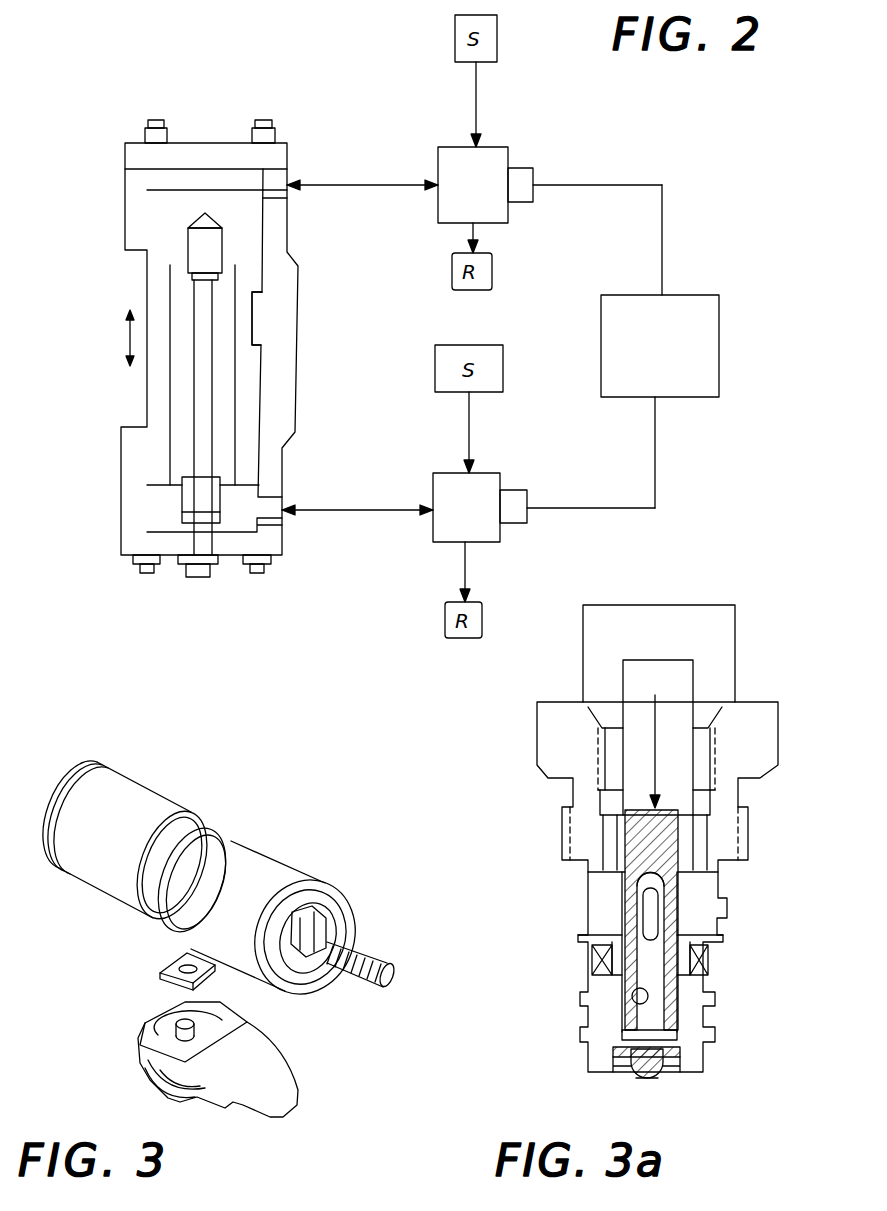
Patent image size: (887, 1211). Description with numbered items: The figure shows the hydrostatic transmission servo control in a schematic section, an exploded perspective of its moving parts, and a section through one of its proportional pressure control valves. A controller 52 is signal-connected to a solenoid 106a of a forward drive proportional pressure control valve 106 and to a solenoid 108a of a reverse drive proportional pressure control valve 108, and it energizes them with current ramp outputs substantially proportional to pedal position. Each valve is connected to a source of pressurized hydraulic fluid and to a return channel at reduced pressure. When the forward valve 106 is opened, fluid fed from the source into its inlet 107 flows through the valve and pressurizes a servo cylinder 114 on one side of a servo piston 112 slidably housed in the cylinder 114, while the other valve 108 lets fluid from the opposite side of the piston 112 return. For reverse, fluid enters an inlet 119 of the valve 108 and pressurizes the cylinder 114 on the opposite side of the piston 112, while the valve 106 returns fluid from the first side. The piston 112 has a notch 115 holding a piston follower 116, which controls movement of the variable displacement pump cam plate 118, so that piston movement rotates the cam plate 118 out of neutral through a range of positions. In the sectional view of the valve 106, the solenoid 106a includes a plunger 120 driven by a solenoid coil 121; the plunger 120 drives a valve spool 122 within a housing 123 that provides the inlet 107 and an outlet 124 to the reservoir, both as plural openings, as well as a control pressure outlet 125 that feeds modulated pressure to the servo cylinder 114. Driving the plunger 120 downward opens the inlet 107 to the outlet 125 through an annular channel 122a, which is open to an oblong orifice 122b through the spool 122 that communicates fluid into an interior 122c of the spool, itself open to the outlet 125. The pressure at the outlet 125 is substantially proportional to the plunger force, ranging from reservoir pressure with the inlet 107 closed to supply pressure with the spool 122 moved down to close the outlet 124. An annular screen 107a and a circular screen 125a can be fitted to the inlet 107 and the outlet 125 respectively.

In FIG. 2, the controller 52 is at (712, 296).
In FIG. 2, the forward drive proportional pressure control valve 106 is at (440, 542).
In FIG. 3A, the forward drive proportional pressure control valve 106 is at (740, 586).
In FIG. 2, the solenoid 106a is at (520, 523).
In FIG. 3A, the solenoid 106a is at (735, 618).
In FIG. 2, the inlet 107 is at (470, 473).
In FIG. 3A, the inlet 107 is at (722, 968).
In FIG. 3A, the annular screen 107a is at (700, 965).
In FIG. 2, the reverse drive proportional pressure control valve 108 is at (500, 147).
In FIG. 2, the solenoid 108a is at (522, 203).
In FIG. 2, the servo piston 112 is at (148, 388).
In FIG. 3, the servo piston 112 is at (140, 800).
In FIG. 2, the servo cylinder 114 is at (124, 208).
In FIG. 2, the notch 115 is at (253, 320).
In FIG. 3, the notch 115 is at (206, 828).
In FIG. 3, the piston follower 116 is at (160, 972).
In FIG. 3, the cam plate 118 is at (290, 1075).
In FIG. 2, the inlet 119 is at (478, 145).
In FIG. 3A, the plunger 120 is at (680, 677).
In FIG. 3A, the solenoid coil 121 is at (735, 655).
In FIG. 3A, the valve spool 122 is at (670, 840).
In FIG. 3A, the annular channel 122a is at (672, 918).
In FIG. 3A, the oblong orifice 122b is at (626, 892).
In FIG. 3A, the interior 122c is at (628, 1008).
In FIG. 3A, the housing 123 is at (697, 927).
In FIG. 3A, the outlet 124 is at (710, 880).
In FIG. 2, the control pressure outlet 125 is at (433, 512).
In FIG. 3A, the control pressure outlet 125 is at (665, 1073).
In FIG. 3A, the circular screen 125a is at (645, 1082).